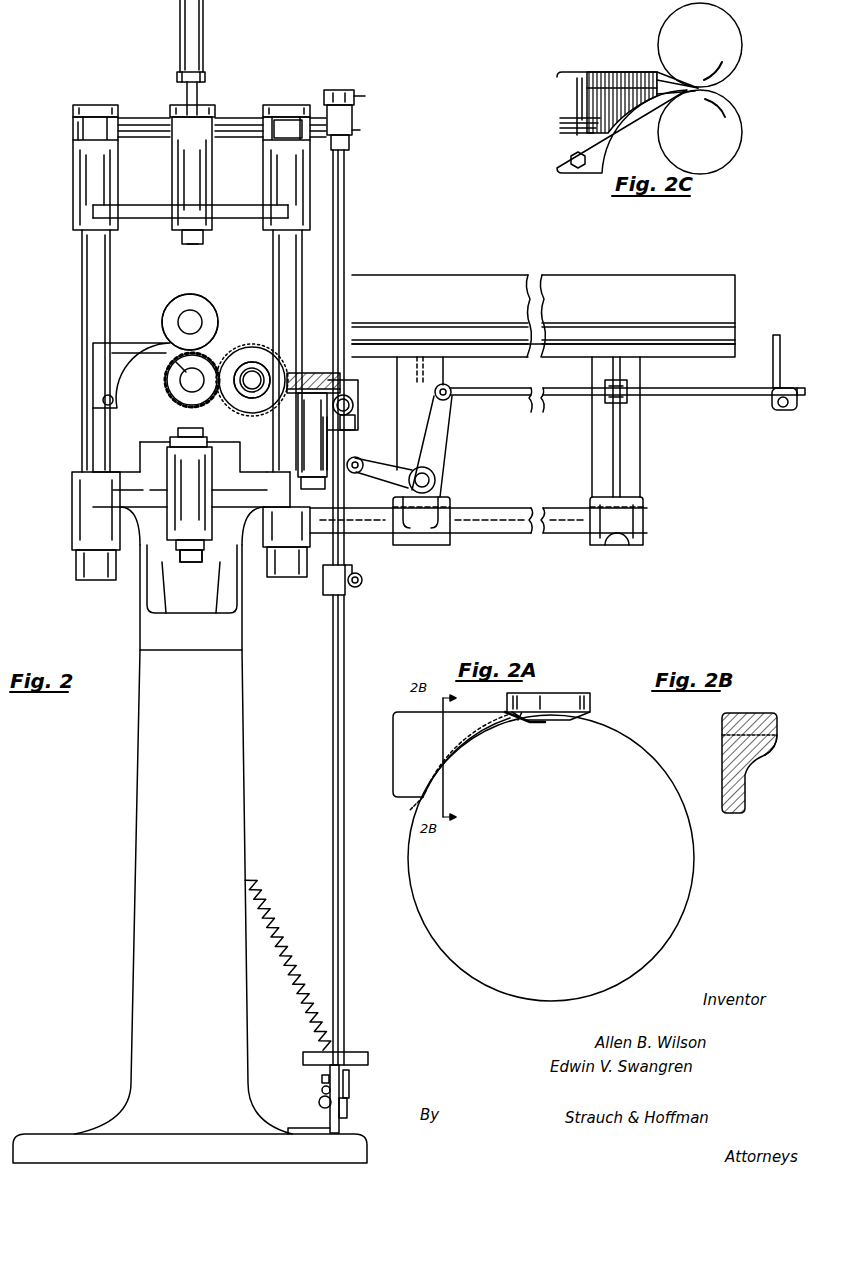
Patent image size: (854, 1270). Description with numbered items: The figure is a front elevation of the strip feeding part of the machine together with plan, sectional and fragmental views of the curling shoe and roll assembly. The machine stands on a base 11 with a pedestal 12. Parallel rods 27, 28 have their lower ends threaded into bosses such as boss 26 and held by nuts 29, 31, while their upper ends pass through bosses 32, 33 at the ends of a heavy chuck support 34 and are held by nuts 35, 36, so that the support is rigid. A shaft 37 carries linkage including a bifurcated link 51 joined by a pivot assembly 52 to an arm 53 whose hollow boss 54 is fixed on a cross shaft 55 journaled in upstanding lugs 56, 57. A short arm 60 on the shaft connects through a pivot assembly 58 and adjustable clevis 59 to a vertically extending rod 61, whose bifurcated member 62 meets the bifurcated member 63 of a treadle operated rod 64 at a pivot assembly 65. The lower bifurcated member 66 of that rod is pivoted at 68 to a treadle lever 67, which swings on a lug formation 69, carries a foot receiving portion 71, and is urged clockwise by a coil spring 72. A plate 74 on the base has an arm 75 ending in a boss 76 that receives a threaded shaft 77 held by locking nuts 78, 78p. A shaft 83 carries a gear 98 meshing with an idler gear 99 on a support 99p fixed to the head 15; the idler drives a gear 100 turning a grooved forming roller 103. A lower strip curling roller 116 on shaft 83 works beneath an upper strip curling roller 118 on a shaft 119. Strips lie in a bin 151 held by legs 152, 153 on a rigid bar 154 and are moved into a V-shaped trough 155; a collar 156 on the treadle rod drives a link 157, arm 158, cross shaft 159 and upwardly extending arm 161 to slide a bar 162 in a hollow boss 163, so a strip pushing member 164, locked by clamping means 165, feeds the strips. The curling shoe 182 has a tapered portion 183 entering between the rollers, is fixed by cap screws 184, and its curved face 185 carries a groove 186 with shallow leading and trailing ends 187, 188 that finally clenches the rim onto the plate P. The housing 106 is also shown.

In FIG. 2, the base 11 is at (243, 990).
In FIG. 2, the pedestal 12 is at (355, 1145).
In FIG. 2, the head 15 is at (150, 452).
In FIG. 2, the laterally extending boss 26 is at (80, 525).
In FIG. 2, the rod 27 is at (277, 257).
In FIG. 2, the rod 28 is at (80, 298).
In FIG. 2, the nut 29 is at (270, 578).
In FIG. 2, the nut 31 is at (76, 576).
In FIG. 2, the boss 32 is at (267, 170).
In FIG. 2, the boss 33 is at (74, 170).
In FIG. 2, the chuck support 34 is at (137, 203).
In FIG. 2, the nut 35 is at (290, 127).
In FIG. 2, the nut 36 is at (77, 128).
In FIG. 2, the shaft 37 is at (189, 241).
In FIG. 2, the bifurcated link 51 is at (204, 10).
In FIG. 2, the pivot assembly 52 is at (190, 62).
In FIG. 2, the arm 53 is at (185, 100).
In FIG. 2, the hollow boss 54 is at (200, 112).
In FIG. 2, the cross shaft 55 is at (237, 120).
In FIG. 2, the upstanding lug 56 is at (280, 105).
In FIG. 2, the upstanding lug 57 is at (90, 105).
In FIG. 2, the pivot assembly 58 is at (356, 100).
In FIG. 2, the adjustable clevis 59 is at (350, 135).
In FIG. 2, the short arm 60 is at (340, 90).
In FIG. 2, the vertically extending rod 61 is at (346, 222).
In FIG. 2, the bifurcated member 62 is at (355, 383).
In FIG. 2, the bifurcated member 63 is at (352, 424).
In FIG. 2, the treadle operated rod 64 is at (345, 680).
In FIG. 2, the pivot assembly 65 is at (352, 405).
In FIG. 2, the bifurcated member 66 is at (322, 1073).
In FIG. 2, the treadle lever 67 is at (351, 1088).
In FIG. 2, the pivot assembly 68 is at (322, 1082).
In FIG. 2, the upstanding lug formation 69 is at (320, 1106).
In FIG. 2, the foot receiving portion 71 is at (360, 1052).
In FIG. 2, the coil spring 72 is at (276, 942).
In FIG. 2, the plate 74 is at (150, 607).
In FIG. 2, the arm 75 is at (190, 608).
In FIG. 2, the boss 76 is at (178, 476).
In FIG. 2, the threaded shaft 77 is at (181, 562).
In FIG. 2, the locking nut 78 is at (205, 556).
In FIG. 2, the locking nut 78p is at (173, 437).
In FIG. 2, the shaft 83 is at (175, 356).
In FIG. 2, the gear 98 is at (164, 386).
In FIG. 2, the idler gear 99 is at (249, 348).
In FIG. 2, the support 99p is at (249, 390).
In FIG. 2, the gear 100 is at (252, 399).
In FIG. 2, the grooved forming roller 103 is at (313, 352).
In FIG. 2, the housing 106 is at (300, 448).
In FIG. 2, the lower strip curling roller 116 is at (168, 383).
In FIG. 2C, the lower strip curling roller 116 is at (740, 140).
In FIG. 2, the upper strip curling roller 118 is at (165, 325).
In FIG. 2C, the upper strip curling roller 118 is at (740, 50).
In FIG. 2A, the upper strip curling roller 118 is at (591, 702).
In FIG. 2, the shaft 119 is at (196, 318).
In FIG. 2, the bin 151 is at (528, 276).
In FIG. 2, the leg 152 is at (640, 430).
In FIG. 2, the leg 153 is at (445, 374).
In FIG. 2, the rigid bar 154 is at (533, 507).
In FIG. 2, the V-shaped trough 155 is at (636, 328).
In FIG. 2, the collar 156 is at (325, 592).
In FIG. 2, the link 157 is at (360, 567).
In FIG. 2, the arm 158 is at (374, 462).
In FIG. 2, the cross shaft 159 is at (436, 480).
In FIG. 2, the upwardly extending arm 161 is at (445, 422).
In FIG. 2, the slidable bar 162 is at (534, 410).
In FIG. 2, the hollow boss 163 is at (630, 398).
In FIG. 2, the strip pushing member 164 is at (777, 335).
In FIG. 2, the clamping means 165 is at (784, 410).
In FIG. 2, the curling shoe 182 is at (100, 386).
In FIG. 2C, the curling shoe 182 is at (570, 126).
In FIG. 2A, the curling shoe 182 is at (403, 775).
In FIG. 2B, the curling shoe 182 is at (722, 740).
In FIG. 2C, the tapered portion 183 is at (662, 96).
In FIG. 2A, the tapered portion 183 is at (505, 710).
In FIG. 2C, the cap screw 184 is at (571, 162).
In FIG. 2C, the curved face 185 is at (630, 96).
In FIG. 2B, the curved face 185 is at (778, 715).
In FIG. 2A, the groove 186 is at (457, 757).
In FIG. 2B, the groove 186 is at (770, 752).
In FIG. 2A, the leading end 187 is at (518, 722).
In FIG. 2A, the trailing end 188 is at (404, 814).
In FIG. 2A, the package P is at (410, 850).